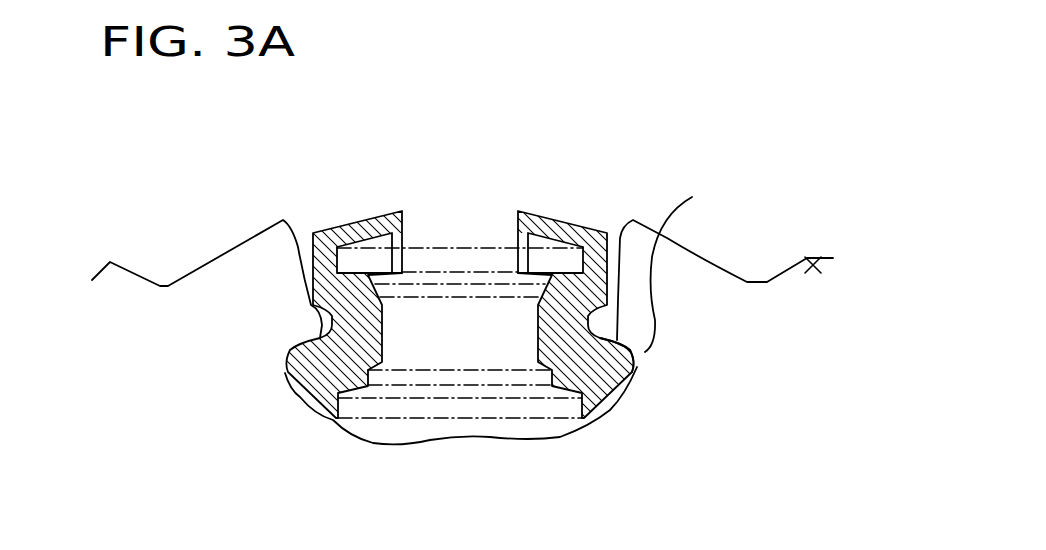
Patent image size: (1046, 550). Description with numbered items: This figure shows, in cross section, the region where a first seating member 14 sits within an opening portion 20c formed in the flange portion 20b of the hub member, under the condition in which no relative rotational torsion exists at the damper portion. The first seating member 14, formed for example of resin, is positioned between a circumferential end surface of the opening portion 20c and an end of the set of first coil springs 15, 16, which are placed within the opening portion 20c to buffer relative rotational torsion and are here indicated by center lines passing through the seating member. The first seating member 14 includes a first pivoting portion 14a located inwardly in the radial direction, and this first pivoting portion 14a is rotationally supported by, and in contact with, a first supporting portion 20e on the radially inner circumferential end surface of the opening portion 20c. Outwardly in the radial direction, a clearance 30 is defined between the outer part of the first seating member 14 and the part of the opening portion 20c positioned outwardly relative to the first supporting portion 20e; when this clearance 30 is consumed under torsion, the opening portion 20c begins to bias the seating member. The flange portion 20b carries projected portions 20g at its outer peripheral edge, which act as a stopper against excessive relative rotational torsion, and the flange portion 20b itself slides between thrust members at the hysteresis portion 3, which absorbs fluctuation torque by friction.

The hysteresis portion 3 is at (790, 103).
The first seating member 14 is at (550, 227).
The first pivoting portion 14a is at (617, 370).
The first coil spring 15 is at (477, 240).
The first coil spring 16 is at (433, 240).
The flange portion 20b is at (693, 273).
The opening portion 20c is at (457, 437).
The first supporting portion 20e is at (685, 258).
The projected portion 20g is at (833, 258).
The clearance 30 is at (307, 247).